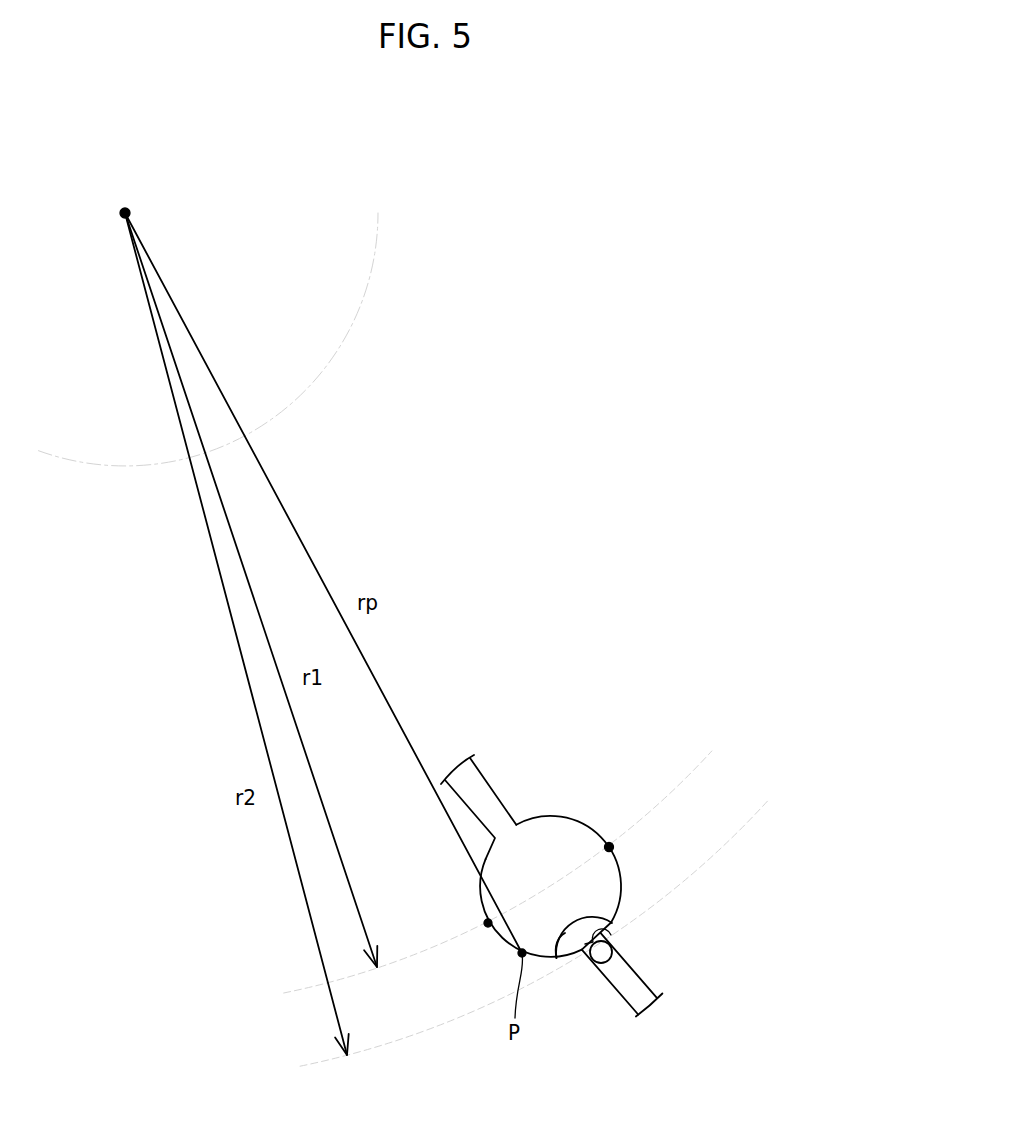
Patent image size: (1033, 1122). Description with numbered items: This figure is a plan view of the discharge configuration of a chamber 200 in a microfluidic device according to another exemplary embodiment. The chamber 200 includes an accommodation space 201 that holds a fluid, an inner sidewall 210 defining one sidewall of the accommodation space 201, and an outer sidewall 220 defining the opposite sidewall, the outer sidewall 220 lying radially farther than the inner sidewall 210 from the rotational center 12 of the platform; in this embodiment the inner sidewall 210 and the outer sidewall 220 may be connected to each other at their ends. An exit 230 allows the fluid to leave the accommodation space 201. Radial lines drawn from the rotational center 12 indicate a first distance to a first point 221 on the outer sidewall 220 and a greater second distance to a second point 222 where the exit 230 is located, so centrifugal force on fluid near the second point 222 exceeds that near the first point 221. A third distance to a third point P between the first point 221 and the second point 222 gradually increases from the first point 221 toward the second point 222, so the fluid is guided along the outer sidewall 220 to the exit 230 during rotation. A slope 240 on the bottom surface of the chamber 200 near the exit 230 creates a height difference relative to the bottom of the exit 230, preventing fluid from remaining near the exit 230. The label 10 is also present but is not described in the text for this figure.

The rotational center 12 is at (126, 212).
The reference plane / workpiece 10 is at (521, 652).
The chamber 200 is at (603, 909).
The accommodation space 201 is at (554, 867).
The inner sidewall 210 is at (558, 815).
The outer sidewall 220 is at (625, 888).
The first point 221 is at (488, 923).
The second point 222 is at (582, 955).
The exit 230 is at (603, 933).
The slope 240 is at (570, 958).